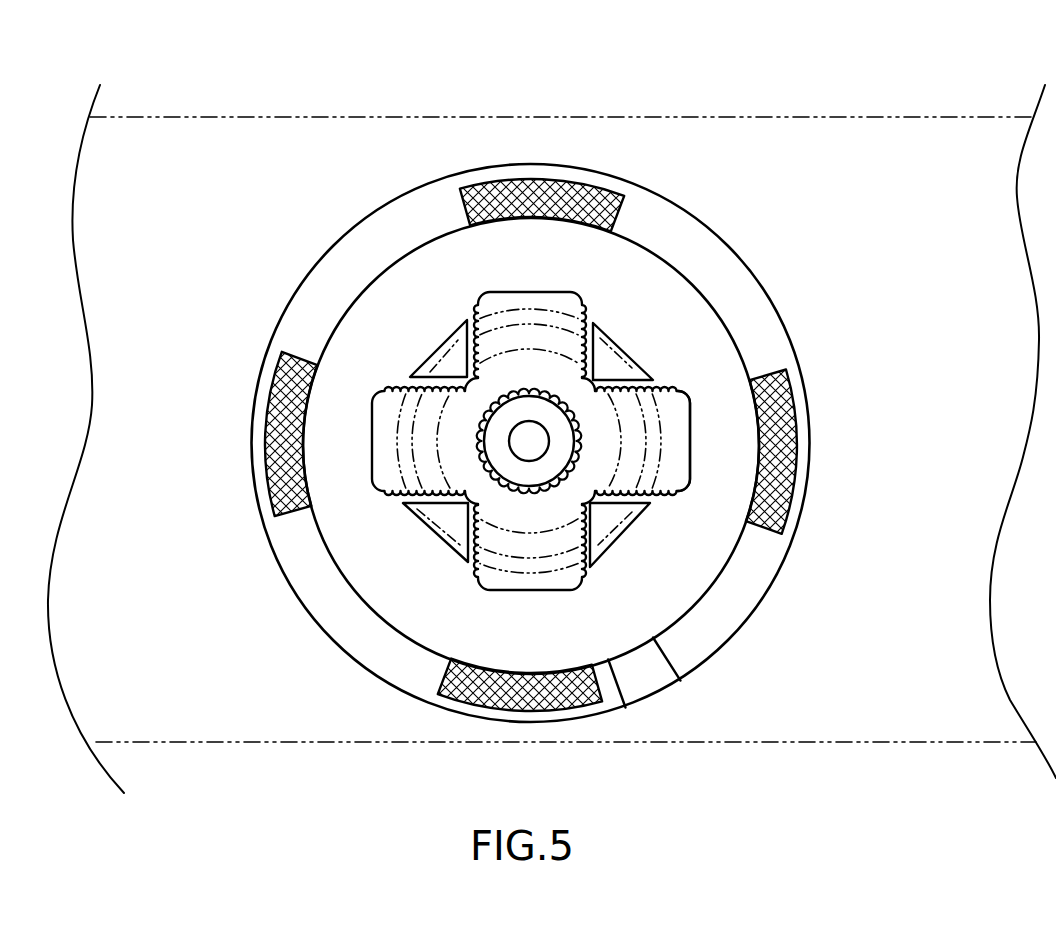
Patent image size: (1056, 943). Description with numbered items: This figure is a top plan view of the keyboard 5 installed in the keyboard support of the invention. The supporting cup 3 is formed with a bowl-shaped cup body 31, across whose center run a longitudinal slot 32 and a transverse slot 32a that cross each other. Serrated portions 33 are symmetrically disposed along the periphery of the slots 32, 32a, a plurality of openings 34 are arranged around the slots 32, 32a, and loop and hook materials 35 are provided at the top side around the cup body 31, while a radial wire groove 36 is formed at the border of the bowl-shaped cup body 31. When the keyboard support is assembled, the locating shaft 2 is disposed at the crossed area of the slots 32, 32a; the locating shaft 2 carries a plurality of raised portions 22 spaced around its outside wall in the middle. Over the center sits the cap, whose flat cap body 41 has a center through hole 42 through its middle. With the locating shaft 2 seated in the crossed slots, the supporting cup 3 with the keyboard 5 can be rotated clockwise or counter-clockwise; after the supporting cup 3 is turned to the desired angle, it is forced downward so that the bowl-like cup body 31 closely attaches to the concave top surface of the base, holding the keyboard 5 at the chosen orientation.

The keyboard 5 is at (902, 186).
The locating shaft 2 is at (515, 415).
The raised portions 22 is at (531, 392).
The supporting cup 3 is at (582, 708).
The bowl-shaped cup body 31 is at (627, 610).
The longitudinal slot 32 is at (517, 557).
The transverse slot 32a is at (653, 443).
The serrated portions 33 is at (662, 407).
The pole piece 34 is at (448, 365).
The loop and hook materials 35 is at (800, 399).
The radial wire groove 36 is at (640, 677).
The flat cap body 41 is at (427, 543).
The center through hole 42 is at (600, 520).